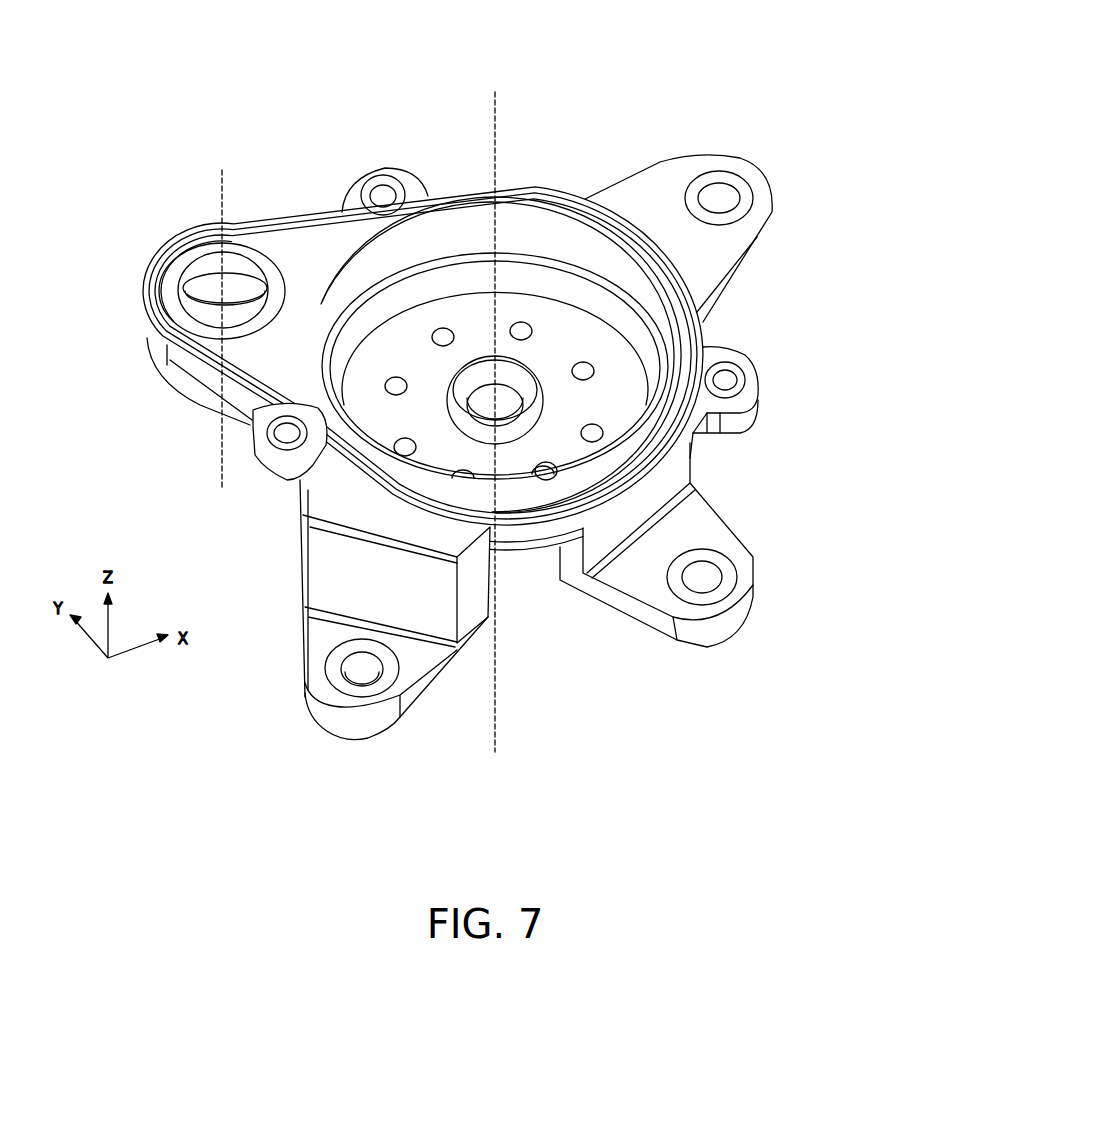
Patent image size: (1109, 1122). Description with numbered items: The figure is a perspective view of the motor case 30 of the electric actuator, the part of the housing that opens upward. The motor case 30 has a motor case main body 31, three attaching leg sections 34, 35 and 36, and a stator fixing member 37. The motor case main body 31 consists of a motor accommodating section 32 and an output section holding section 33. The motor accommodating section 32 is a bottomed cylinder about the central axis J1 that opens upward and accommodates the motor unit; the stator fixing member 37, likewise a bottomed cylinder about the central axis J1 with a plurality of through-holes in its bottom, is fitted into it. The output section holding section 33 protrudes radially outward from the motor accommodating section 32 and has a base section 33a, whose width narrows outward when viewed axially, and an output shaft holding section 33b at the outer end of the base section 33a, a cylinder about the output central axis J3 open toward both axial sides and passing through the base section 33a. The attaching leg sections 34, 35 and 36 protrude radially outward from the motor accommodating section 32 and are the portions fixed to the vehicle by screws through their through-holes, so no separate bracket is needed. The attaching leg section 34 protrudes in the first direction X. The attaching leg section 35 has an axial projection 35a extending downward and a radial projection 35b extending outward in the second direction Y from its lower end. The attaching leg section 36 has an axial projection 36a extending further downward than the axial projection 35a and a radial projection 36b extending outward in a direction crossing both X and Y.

The motor case 30 is at (515, 386).
The motor case main body 31 is at (566, 214).
The motor accommodating section 32 is at (703, 323).
The output section holding section 33 is at (287, 234).
The base section 33a is at (338, 240).
The output shaft holding section 33b is at (240, 227).
The attaching leg section 34 is at (740, 232).
The attaching leg section 35 is at (724, 545).
The axial projection 35a is at (683, 472).
The radial projection 35b is at (702, 527).
The attaching leg section 36 is at (461, 625).
The axial projection 36a is at (443, 603).
The radial projection 36b is at (432, 685).
The stator fixing member 37 is at (588, 333).
The central axis J1 is at (497, 138).
The output central axis J3 is at (222, 428).